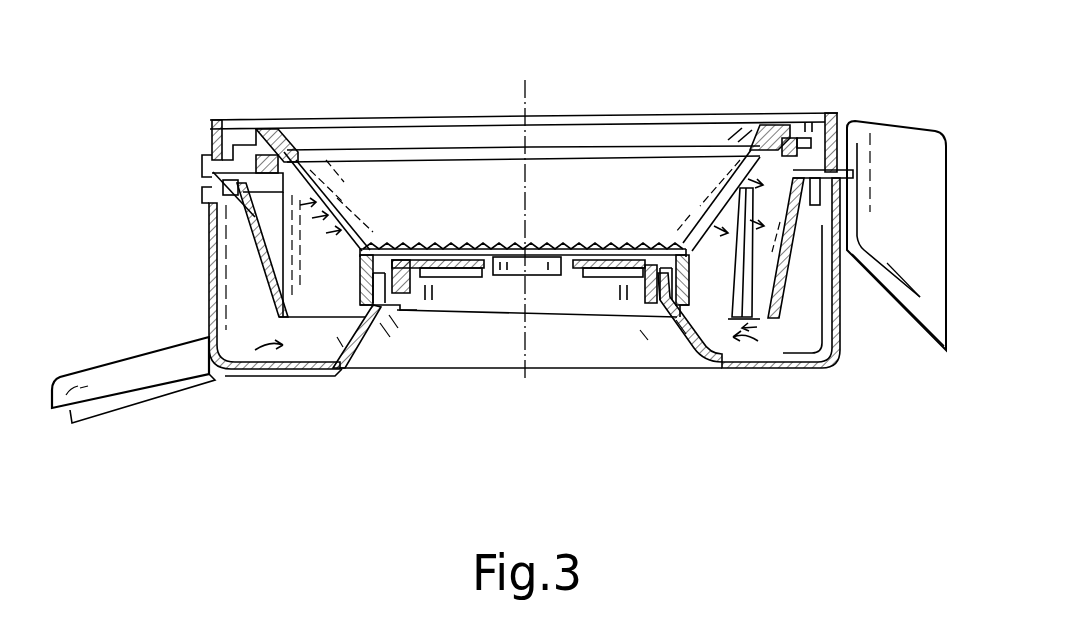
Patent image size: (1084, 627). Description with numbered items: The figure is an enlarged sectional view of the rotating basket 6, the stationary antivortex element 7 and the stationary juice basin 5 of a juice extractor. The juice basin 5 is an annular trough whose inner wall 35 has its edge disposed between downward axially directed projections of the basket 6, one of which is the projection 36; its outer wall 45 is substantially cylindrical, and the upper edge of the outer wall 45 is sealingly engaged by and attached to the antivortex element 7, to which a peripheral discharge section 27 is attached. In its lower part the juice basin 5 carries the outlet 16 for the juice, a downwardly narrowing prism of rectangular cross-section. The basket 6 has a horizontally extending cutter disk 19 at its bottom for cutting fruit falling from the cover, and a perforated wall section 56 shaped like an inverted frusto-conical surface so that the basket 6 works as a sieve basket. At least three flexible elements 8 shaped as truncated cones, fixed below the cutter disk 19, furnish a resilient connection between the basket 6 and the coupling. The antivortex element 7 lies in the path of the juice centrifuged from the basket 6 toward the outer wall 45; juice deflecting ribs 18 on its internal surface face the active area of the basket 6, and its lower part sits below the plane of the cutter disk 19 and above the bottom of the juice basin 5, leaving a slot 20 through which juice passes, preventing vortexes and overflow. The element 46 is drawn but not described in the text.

The basket 6 is at (298, 121).
The perforated wall section 56 is at (742, 194).
The discharge section 27 is at (882, 124).
The outer wall 45 is at (214, 222).
The juice deflecting ribs 18 is at (240, 258).
The outlet 16 is at (176, 364).
The slot 20 is at (275, 340).
The juice basin 5 is at (322, 352).
The inner wall 35 is at (360, 362).
The flexible elements 8 is at (410, 290).
The cutter disk 19 is at (532, 258).
The axially directed projection 36 is at (672, 318).
The right mounting post 46 is at (690, 262).
The antivortex element 7 is at (774, 292).